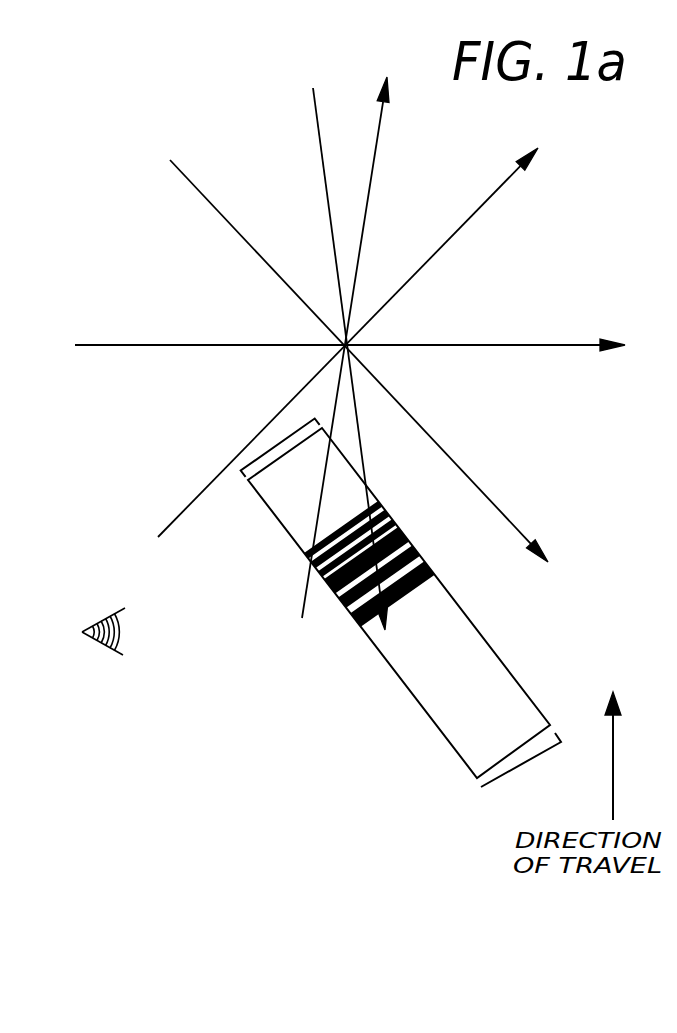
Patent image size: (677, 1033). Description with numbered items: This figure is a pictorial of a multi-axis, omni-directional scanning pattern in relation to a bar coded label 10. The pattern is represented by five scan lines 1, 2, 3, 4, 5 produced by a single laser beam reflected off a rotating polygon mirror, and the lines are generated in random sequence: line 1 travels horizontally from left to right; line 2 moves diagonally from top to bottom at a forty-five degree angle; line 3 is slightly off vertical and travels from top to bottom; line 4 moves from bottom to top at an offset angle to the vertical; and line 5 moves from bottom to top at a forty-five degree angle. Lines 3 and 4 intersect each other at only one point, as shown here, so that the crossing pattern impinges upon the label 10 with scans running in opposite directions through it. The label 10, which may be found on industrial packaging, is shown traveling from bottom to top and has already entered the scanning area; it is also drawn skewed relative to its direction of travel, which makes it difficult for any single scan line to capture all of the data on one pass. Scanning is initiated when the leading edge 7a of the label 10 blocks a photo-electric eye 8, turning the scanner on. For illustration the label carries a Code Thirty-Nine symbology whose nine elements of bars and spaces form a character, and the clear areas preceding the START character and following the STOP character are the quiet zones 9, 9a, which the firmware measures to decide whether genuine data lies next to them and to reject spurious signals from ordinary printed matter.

The scan line 1 is at (340, 344).
The scan line 2 is at (350, 343).
The scan line 3 is at (342, 342).
The scan line 4 is at (340, 367).
The scan line 5 is at (333, 356).
The leading edge 7a is at (300, 447).
The photo-electric eye 8 is at (97, 642).
The quiet zone 9 is at (268, 458).
The quiet zone 9a is at (498, 778).
The label 10 is at (398, 680).